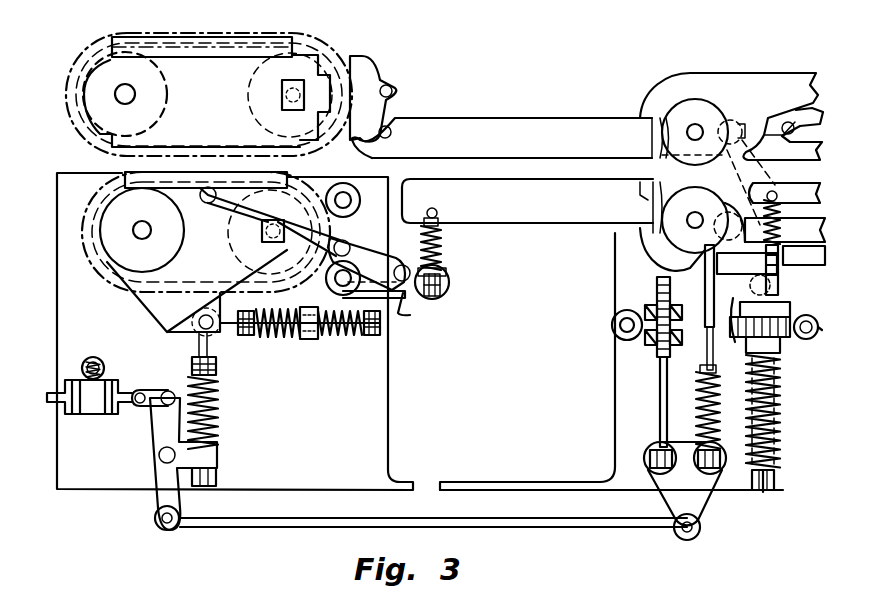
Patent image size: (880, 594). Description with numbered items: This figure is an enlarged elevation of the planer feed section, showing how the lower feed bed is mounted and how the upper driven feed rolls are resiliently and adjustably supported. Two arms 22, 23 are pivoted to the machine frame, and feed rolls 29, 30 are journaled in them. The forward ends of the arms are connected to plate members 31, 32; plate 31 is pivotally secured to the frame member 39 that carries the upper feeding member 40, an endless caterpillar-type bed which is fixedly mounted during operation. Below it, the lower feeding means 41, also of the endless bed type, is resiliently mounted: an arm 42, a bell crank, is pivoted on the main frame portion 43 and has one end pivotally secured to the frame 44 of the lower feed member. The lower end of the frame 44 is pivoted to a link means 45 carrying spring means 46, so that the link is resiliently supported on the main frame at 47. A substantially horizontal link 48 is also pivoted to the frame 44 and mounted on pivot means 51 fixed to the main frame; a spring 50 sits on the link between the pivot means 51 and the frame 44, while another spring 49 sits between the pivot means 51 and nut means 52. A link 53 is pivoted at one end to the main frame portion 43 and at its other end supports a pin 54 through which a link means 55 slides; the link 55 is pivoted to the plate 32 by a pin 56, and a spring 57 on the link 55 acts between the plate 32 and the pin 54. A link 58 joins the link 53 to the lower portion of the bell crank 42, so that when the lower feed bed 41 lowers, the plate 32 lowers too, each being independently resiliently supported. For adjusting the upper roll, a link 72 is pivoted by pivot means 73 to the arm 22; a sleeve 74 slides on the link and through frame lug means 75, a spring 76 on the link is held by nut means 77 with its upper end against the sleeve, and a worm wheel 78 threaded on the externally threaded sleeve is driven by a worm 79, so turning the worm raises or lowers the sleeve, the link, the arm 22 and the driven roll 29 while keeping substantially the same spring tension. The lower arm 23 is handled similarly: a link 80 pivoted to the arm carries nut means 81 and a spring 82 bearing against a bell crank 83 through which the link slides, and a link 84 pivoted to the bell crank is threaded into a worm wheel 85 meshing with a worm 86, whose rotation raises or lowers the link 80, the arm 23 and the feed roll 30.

The arm 22 is at (755, 82).
The arm 23 is at (738, 252).
The feed roll 29 is at (699, 98).
The feed roll 30 is at (668, 218).
The plate member 31 is at (510, 126).
The plate member 32 is at (563, 222).
The frame member 39 is at (190, 40).
The upper feeding member 40 is at (235, 68).
The lower feeding means 41 is at (110, 290).
The arm 42 is at (352, 224).
The main frame portion 43 is at (378, 428).
The frame 44 is at (112, 260).
The link means 45 is at (196, 355).
The spring means 46 is at (218, 401).
The pivot support 47 is at (210, 458).
The link 48 is at (228, 334).
The spring 49 is at (346, 338).
The spring 50 is at (276, 340).
The pivot means 51 is at (311, 341).
The nut means 52 is at (368, 338).
The link 53 is at (420, 308).
The pin 54 is at (450, 286).
The link means 55 is at (443, 250).
The pin 56 is at (438, 215).
The spring 57 is at (447, 267).
The link 58 is at (355, 254).
The link 72 is at (752, 182).
The pivot means 73 is at (728, 140).
The sleeve 74 is at (782, 302).
The frame lug means 75 is at (740, 330).
The spring 76 is at (772, 430).
The nut means 77 is at (780, 450).
The worm wheel 78 is at (796, 318).
The worm 79 is at (828, 336).
The link 80 is at (705, 305).
The nut means 81 is at (703, 374).
The spring 82 is at (718, 430).
The bell crank 83 is at (692, 510).
The link 84 is at (660, 412).
The worm wheel 85 is at (656, 310).
The worm 86 is at (627, 308).